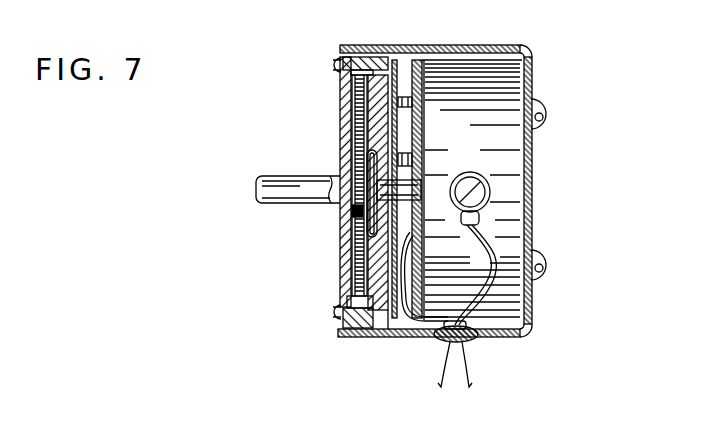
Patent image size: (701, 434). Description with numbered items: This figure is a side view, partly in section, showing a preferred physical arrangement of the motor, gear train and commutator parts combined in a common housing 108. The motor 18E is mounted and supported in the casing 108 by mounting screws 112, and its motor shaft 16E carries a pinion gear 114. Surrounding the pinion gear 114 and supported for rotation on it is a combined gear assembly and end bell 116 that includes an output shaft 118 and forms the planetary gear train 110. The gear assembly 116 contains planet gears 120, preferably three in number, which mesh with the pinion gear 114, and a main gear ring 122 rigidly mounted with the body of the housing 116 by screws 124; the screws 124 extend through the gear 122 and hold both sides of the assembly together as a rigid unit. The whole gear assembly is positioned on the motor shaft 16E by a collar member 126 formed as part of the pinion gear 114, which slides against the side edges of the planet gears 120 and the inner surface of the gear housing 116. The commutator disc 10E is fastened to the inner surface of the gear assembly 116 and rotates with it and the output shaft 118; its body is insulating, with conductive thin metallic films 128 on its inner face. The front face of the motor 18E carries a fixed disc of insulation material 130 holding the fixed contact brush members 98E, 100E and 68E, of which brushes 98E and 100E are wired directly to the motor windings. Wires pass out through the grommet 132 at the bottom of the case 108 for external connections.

The commutator disc 10E is at (391, 330).
The motor shaft 16E is at (413, 190).
The motor 18E is at (520, 165).
The fixed contact brush member 68E is at (427, 240).
The fixed contact brush member 98E is at (422, 102).
The fixed contact brush member 100E is at (414, 152).
The housing 108 is at (528, 230).
The planetary gear train 110 is at (330, 298).
The mounting screws 112 is at (544, 108).
The pinion gear 114 is at (352, 210).
The combined gear assembly and end bell 116 is at (343, 98).
The output shaft 118 is at (278, 180).
The planet gears 120 is at (360, 120).
The main gear ring 122 is at (357, 326).
The screws 124 is at (336, 62).
The collar member 126 is at (364, 225).
The thin metallic films 128 is at (397, 76).
The fixed disc of insulation material 130 is at (428, 60).
The grommet 132 is at (478, 342).